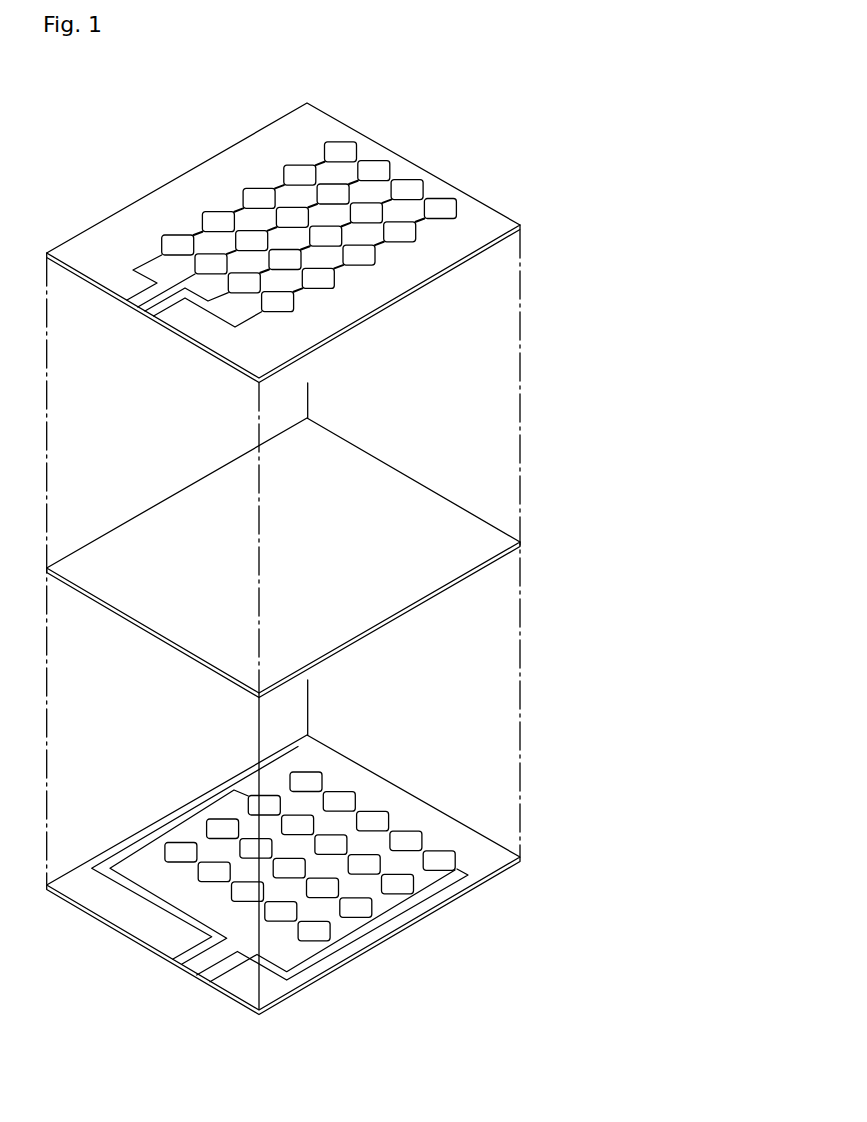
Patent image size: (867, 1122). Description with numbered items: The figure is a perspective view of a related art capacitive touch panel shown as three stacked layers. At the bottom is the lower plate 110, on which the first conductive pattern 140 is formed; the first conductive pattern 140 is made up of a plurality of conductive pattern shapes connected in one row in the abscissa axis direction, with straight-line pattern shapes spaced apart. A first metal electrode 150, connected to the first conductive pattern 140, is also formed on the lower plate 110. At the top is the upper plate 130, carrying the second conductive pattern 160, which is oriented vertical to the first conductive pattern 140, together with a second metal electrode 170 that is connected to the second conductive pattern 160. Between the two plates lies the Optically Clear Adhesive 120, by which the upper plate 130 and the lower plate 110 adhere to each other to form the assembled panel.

The lower plate 110 is at (412, 806).
The Optically Clear Adhesive (OCA) 120 is at (160, 526).
The upper plate 130 is at (226, 166).
The first conductive pattern 140 is at (297, 783).
The first metal electrode 150 is at (412, 911).
The second conductive pattern 160 is at (447, 202).
The second metal electrode 170 is at (149, 250).